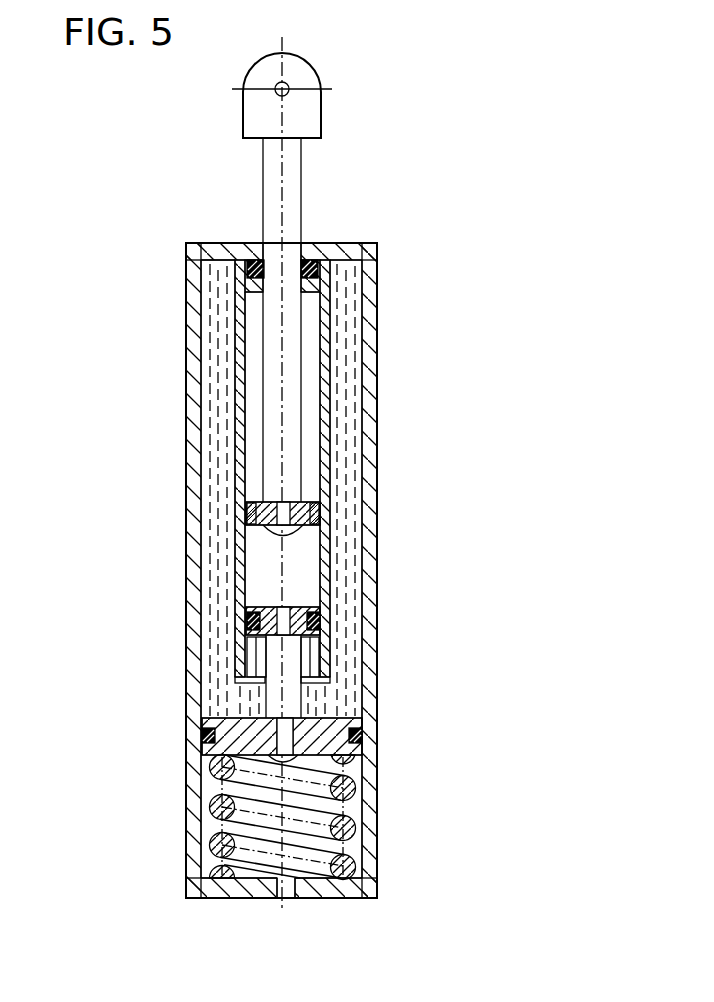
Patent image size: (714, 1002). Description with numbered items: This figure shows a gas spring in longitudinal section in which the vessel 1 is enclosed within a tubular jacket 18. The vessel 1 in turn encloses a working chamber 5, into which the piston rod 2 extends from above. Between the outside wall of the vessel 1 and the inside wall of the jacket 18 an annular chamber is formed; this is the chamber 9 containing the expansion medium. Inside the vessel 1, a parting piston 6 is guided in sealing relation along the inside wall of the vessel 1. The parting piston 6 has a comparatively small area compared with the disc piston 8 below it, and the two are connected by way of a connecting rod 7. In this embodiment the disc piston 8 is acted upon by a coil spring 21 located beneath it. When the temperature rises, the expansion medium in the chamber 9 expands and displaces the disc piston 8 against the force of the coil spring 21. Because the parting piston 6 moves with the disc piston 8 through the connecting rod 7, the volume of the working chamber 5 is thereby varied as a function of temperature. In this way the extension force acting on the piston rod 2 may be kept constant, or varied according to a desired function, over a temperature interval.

The vessel 1 is at (235, 375).
The piston rod 2 is at (295, 333).
The working chamber 5 is at (270, 568).
The parting piston 6 is at (248, 617).
The connecting rod 7 is at (292, 692).
The disc piston 8 is at (328, 747).
The chamber containing the expansion medium 9 is at (348, 490).
The tubular jacket 18 is at (370, 417).
The coil spring 21 is at (342, 882).